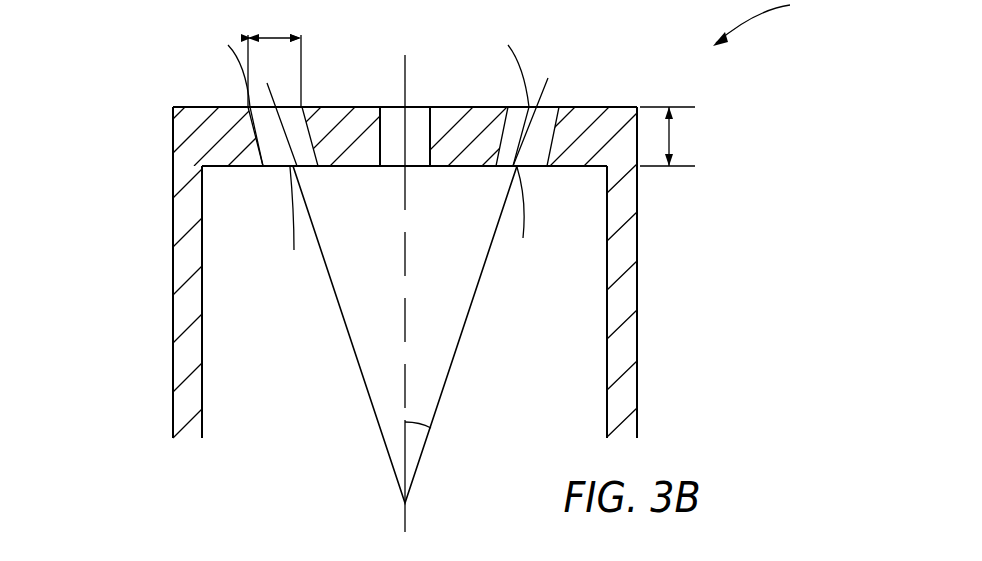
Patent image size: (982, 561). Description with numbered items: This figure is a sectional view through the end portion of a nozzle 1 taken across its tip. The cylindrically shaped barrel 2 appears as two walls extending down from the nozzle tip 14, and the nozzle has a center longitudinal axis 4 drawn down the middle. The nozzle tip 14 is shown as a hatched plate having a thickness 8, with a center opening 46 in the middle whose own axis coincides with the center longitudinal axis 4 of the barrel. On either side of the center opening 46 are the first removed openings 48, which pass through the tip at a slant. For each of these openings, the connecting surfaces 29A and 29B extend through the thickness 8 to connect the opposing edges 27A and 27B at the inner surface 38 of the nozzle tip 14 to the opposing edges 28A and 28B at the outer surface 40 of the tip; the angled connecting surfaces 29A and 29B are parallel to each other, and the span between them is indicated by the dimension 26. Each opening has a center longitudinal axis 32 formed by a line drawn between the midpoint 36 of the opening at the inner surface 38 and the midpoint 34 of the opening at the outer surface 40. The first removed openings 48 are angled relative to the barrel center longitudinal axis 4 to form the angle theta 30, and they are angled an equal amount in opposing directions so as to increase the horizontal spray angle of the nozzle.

The nozzle 1 is at (762, 23).
The barrel 2 is at (640, 369).
The center longitudinal axis 4 is at (407, 304).
The thickness 8 is at (669, 135).
The nozzle tip 14 is at (180, 133).
The slot width 26 is at (280, 35).
The opposing edge at inner surface 27A is at (318, 168).
The opposing edge at inner surface 27B is at (266, 168).
The opposing edge at outer surface 28A is at (302, 107).
The opposing edge at outer surface 28B is at (247, 107).
The connecting surface 29A is at (309, 150).
The connecting surface 29B is at (259, 150).
The angle θ 30 is at (428, 428).
The center longitudinal axis of opening 32 is at (350, 340).
The midpoint of opening at outer surface 34 is at (279, 107).
The midpoint of opening at inner surface 36 is at (408, 167).
The inner surface 38 is at (246, 168).
The outer surface 40 is at (462, 107).
The center opening 46 is at (396, 107).
The first removed openings 48 is at (365, 98).